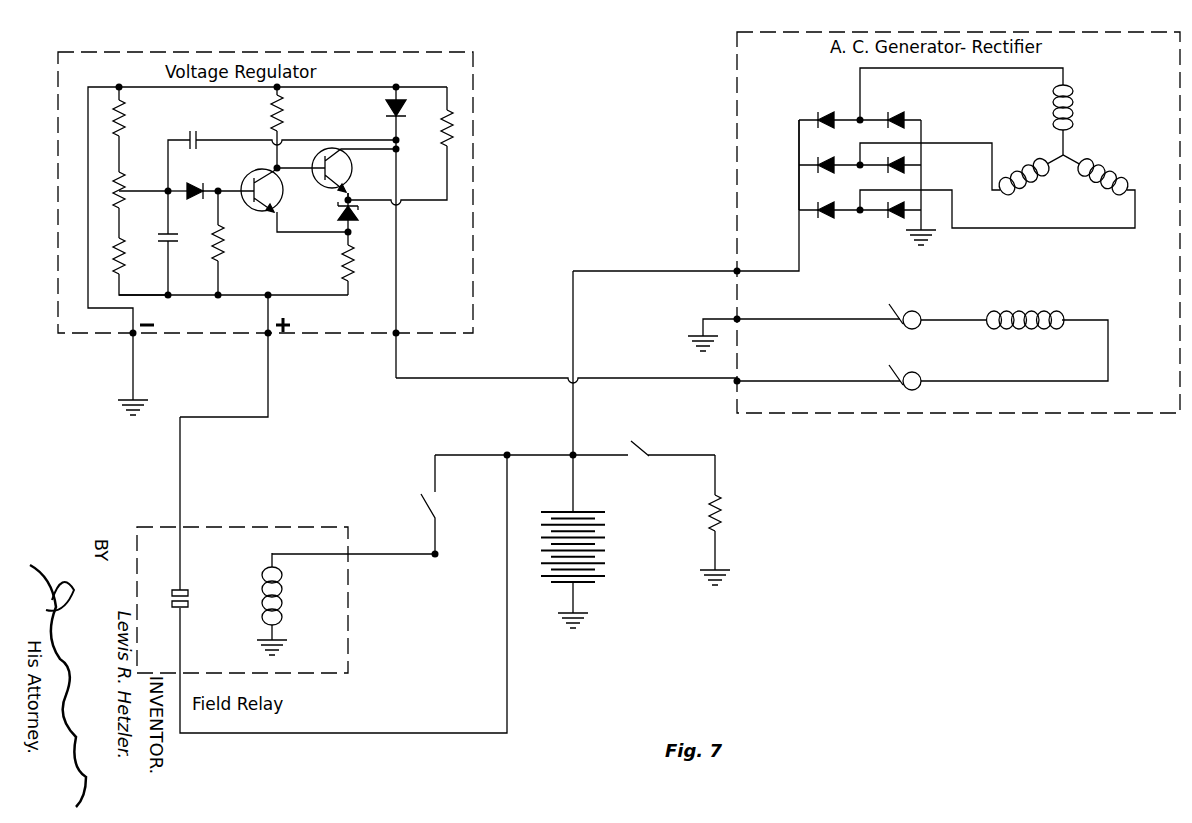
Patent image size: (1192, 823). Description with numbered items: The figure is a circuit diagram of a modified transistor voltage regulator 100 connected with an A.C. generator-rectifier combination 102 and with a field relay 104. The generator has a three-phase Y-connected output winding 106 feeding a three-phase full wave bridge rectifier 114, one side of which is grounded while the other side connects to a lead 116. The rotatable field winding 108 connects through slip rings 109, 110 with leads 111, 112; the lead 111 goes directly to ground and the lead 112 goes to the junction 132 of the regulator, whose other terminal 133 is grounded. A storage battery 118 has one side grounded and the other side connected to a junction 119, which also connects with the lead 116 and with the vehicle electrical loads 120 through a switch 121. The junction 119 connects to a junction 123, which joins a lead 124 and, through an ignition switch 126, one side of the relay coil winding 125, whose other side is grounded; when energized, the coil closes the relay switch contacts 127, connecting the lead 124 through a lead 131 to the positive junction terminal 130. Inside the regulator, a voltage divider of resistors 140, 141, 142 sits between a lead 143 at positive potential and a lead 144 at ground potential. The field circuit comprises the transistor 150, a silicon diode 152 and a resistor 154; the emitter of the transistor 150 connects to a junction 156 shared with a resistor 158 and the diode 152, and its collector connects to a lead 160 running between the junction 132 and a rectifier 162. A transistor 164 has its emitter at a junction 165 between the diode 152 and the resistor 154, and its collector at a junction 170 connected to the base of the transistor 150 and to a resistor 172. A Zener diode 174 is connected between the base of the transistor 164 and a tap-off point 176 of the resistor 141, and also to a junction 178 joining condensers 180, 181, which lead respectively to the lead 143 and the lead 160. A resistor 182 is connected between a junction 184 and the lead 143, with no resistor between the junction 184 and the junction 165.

The voltage regulator 100 is at (468, 80).
The A.C. generator-rectifier combination 102 is at (1138, 107).
The field relay 104 is at (344, 613).
The three-phase Y-connected output winding 106 is at (1074, 141).
The field winding 108 is at (1014, 315).
The slip ring 109 is at (920, 313).
The slip ring 110 is at (918, 373).
The lead 111 is at (762, 319).
The lead 112 is at (613, 379).
The three-phase full wave bridge rectifier 114 is at (807, 142).
The lead 116 is at (586, 270).
The storage battery 118 is at (604, 540).
The junction 119 is at (576, 453).
The electrical energizable loads 120 is at (722, 521).
The switch 121 is at (646, 450).
The junction 123 is at (507, 454).
The lead 124 is at (508, 675).
The relay coil winding 125 is at (284, 596).
The ignition switch 126 is at (441, 503).
The relay switch contacts 127 is at (190, 598).
The positive junction terminal 130 is at (272, 338).
The lead 131 is at (182, 470).
The junction 132 is at (398, 332).
The terminal 133 is at (135, 335).
The resistor 140 is at (122, 118).
The resistor 141 is at (122, 172).
The resistor 142 is at (123, 245).
The lead 143 is at (303, 296).
The lead 144 is at (134, 87).
The transistor 150 is at (349, 172).
The silicon diode 152 is at (355, 215).
The resistor 154 is at (355, 260).
The junction 156 is at (351, 199).
The resistor 158 is at (453, 124).
The lead 160 is at (447, 170).
The rectifier 162 is at (404, 104).
The transistor 164 is at (274, 208).
The junction 165 is at (346, 234).
The junction 170 is at (278, 167).
The resistor 172 is at (272, 112).
The Zener diode 174 is at (198, 184).
The tap-off point 176 is at (125, 190).
The junction 178 is at (170, 196).
The condenser 180 is at (164, 242).
The condenser 181 is at (198, 138).
The resistor 182 is at (224, 252).
The junction 184 is at (214, 190).